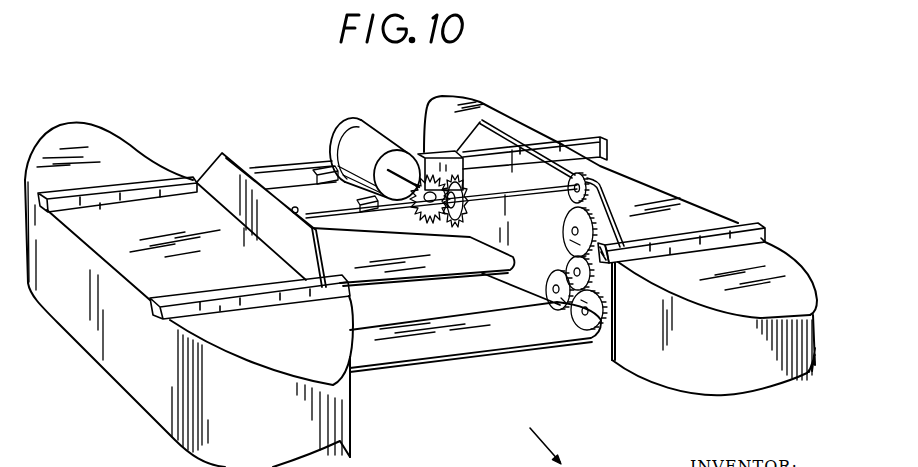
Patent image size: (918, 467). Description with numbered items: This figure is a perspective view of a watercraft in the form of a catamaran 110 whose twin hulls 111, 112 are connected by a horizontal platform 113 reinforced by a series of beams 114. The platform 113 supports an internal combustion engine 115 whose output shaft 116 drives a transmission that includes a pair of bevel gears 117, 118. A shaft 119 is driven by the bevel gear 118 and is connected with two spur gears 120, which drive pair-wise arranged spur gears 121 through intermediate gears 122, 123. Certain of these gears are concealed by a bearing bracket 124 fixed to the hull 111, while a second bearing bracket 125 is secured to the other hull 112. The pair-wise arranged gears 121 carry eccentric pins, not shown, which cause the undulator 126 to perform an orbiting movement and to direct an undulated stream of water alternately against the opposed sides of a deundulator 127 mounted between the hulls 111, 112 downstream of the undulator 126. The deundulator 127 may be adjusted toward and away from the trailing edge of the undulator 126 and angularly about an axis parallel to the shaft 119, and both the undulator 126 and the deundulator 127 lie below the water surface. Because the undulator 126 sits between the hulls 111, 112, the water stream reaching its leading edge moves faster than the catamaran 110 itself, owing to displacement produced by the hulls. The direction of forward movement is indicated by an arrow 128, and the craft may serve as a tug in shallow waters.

The catamaran 110 is at (490, 92).
The hull 111 is at (148, 403).
The hull 112 is at (816, 353).
The horizontal platform 113 is at (295, 190).
The beam 114 is at (152, 181).
The internal combustion engine 115 is at (362, 135).
The output shaft 116 is at (390, 210).
The bevel gear 117 is at (396, 196).
The bevel gear 118 is at (466, 188).
The shaft 119 is at (544, 194).
The spur gear 120 is at (591, 183).
The spur gear 121 is at (552, 272).
The intermediate gear 122 is at (564, 222).
The intermediate gear 123 is at (592, 279).
The bearing bracket 124 is at (223, 200).
The second bearing bracket 125 is at (498, 145).
The undulator 126 is at (497, 342).
The deundulator 127 is at (393, 278).
The arrow 128 is at (532, 438).